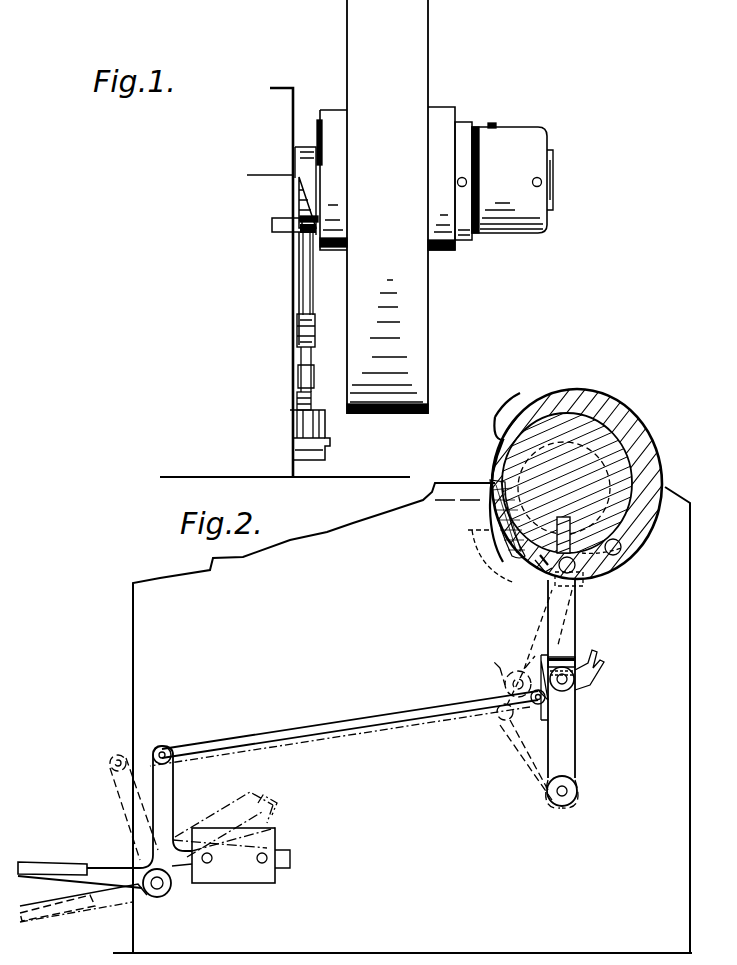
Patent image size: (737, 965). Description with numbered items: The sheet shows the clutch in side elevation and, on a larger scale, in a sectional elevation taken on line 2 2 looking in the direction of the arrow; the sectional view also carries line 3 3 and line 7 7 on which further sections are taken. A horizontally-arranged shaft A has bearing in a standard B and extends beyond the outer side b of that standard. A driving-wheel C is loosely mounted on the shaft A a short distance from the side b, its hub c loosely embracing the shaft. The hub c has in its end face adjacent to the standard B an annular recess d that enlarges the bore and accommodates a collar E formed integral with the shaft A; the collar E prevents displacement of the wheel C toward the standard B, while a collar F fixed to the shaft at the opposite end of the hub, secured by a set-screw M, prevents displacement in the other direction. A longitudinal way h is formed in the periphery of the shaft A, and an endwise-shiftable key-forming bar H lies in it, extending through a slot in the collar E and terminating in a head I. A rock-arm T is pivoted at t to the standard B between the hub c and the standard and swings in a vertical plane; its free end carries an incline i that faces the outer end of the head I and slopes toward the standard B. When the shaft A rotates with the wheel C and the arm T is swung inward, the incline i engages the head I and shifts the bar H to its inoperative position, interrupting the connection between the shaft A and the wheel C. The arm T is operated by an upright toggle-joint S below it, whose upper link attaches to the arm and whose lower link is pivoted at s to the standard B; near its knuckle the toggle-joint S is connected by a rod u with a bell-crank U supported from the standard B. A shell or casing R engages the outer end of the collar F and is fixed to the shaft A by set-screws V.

In FIG. 1, the shaft A is at (308, 147).
In FIG. 2, the shaft A is at (600, 452).
In FIG. 1, the standard B is at (273, 271).
In FIG. 2, the standard B is at (690, 575).
In FIG. 1, the driving-wheel C is at (420, 15).
In FIG. 2, the driving-wheel C is at (530, 404).
In FIG. 2, the collar E is at (573, 432).
In FIG. 1, the collar F is at (468, 120).
In FIG. 2, the endwise-shiftable bar H is at (564, 488).
In FIG. 1, the head I is at (311, 238).
In FIG. 2, the head I is at (553, 572).
In FIG. 1, the set-screw M is at (466, 193).
In FIG. 1, the shell or casing R is at (527, 120).
In FIG. 1, the toggle-joint S is at (313, 302).
In FIG. 2, the toggle-joint S is at (580, 708).
In FIG. 1, the rock-arm T is at (272, 222).
In FIG. 2, the rock-arm T is at (478, 560).
In FIG. 1, the bell-crank U is at (313, 395).
In FIG. 2, the bell-crank U is at (112, 870).
In FIG. 1, the set-screw V is at (539, 178).
In FIG. 1, the outer side of the standard b is at (297, 266).
In FIG. 2, the outer side of the standard b is at (402, 718).
In FIG. 1, the hub c is at (444, 108).
In FIG. 2, the hub c is at (578, 571).
In FIG. 2, the annular recess d is at (605, 470).
In FIG. 2, the way h is at (562, 517).
In FIG. 1, the incline i is at (312, 192).
In FIG. 2, the incline i is at (493, 500).
In FIG. 1, the pivot s is at (300, 398).
In FIG. 2, the pivot s is at (572, 796).
In FIG. 1, the pivot t is at (300, 234).
In FIG. 2, the pivot t is at (622, 547).
In FIG. 1, the rod u is at (312, 355).
In FIG. 2, the rod u is at (365, 745).
In FIG. 1, the section line 2 2 is at (323, 108).
In FIG. 2, the section line 3 3 is at (598, 380).
In FIG. 1, the section line 7 7 is at (493, 124).